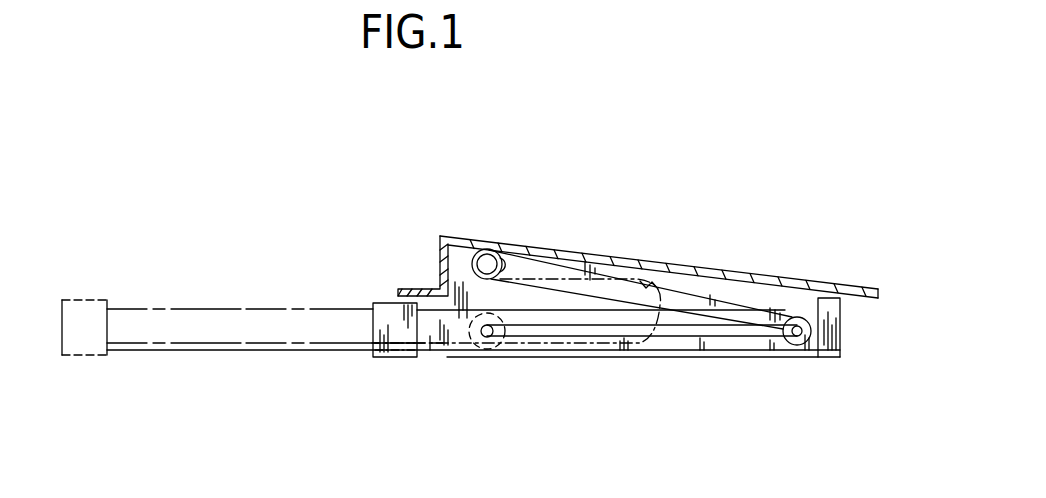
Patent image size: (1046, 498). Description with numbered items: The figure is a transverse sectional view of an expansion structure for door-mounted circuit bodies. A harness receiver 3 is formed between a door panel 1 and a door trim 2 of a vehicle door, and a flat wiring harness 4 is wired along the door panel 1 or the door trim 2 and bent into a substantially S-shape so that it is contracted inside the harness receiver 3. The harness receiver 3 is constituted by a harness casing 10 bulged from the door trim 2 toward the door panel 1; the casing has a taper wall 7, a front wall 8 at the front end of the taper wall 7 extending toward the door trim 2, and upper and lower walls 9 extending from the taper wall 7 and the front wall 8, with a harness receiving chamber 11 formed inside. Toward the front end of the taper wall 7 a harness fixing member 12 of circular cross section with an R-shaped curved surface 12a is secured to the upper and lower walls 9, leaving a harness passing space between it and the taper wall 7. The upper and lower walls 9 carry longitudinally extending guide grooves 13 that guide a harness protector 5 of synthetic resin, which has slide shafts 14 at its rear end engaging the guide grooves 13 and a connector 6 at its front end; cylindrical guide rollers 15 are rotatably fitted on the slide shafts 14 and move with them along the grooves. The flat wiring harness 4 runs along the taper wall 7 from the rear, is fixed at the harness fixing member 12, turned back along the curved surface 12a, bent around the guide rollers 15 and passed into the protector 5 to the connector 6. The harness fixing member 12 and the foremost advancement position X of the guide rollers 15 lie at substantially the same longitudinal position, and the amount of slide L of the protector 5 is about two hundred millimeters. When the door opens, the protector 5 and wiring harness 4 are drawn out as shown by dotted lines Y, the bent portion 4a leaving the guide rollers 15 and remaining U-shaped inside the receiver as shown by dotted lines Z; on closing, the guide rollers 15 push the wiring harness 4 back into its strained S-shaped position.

The door panel 1 is at (642, 222).
The door trim 2 is at (573, 377).
The harness receiver 3 is at (599, 250).
The flat wiring harness 4 is at (862, 297).
The bent portion 4a is at (730, 307).
The harness protector 5 is at (458, 335).
The connector 6 is at (405, 358).
The taper wall 7 is at (656, 265).
The front wall 8 is at (438, 268).
The upper and lower walls 9 is at (810, 358).
The harness casing 10 is at (842, 335).
The harness receiving chamber 11 is at (770, 297).
The harness fixing member 12 is at (496, 250).
The curved surface 12a is at (505, 265).
The guide grooves 13 is at (668, 337).
The slide shafts 14 is at (785, 345).
The guide rollers 15 is at (812, 320).
The foremost advancement position X is at (497, 347).
The dotted lines Y is at (240, 307).
The dotted lines Z is at (670, 282).
The amount of slide L is at (797, 331).